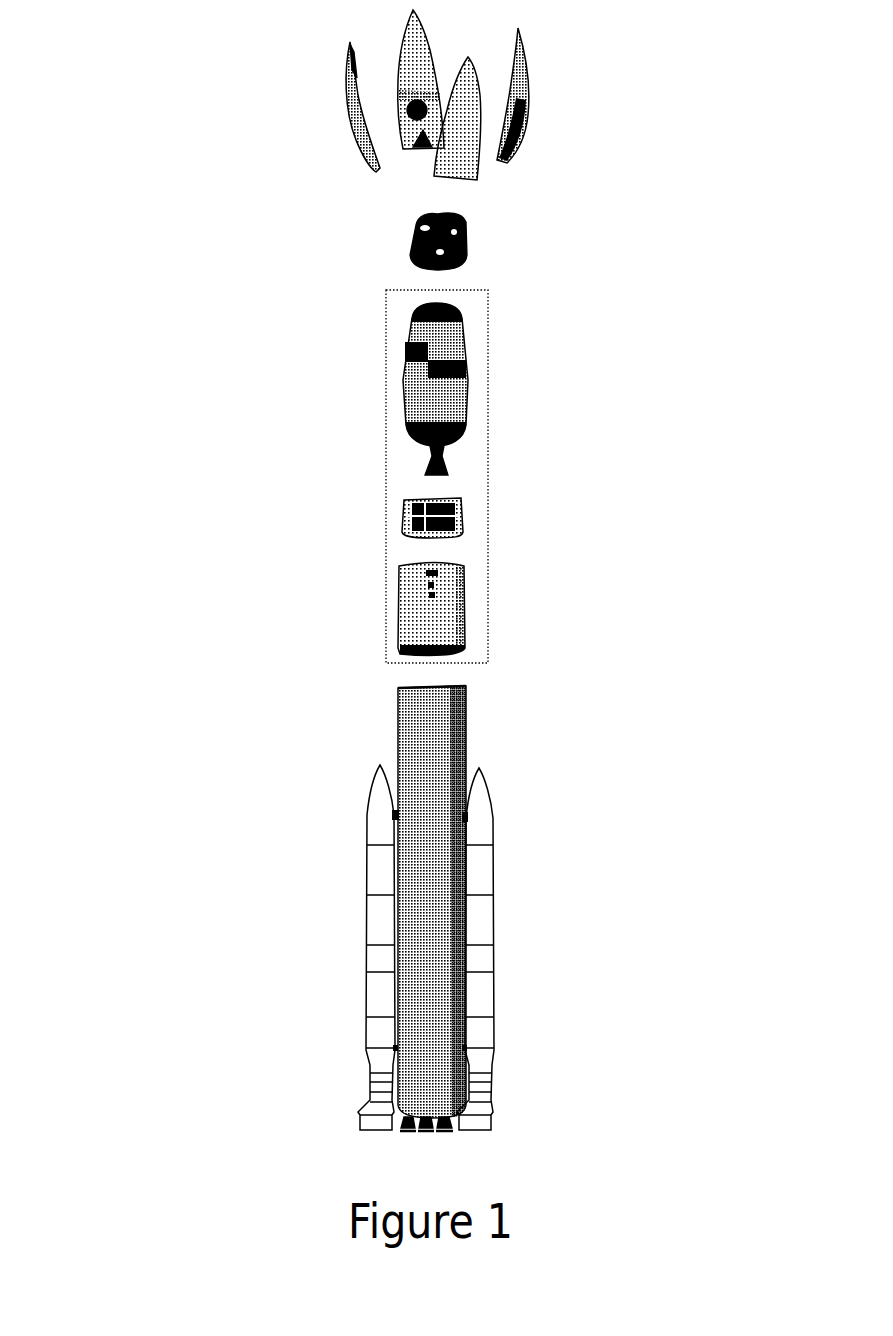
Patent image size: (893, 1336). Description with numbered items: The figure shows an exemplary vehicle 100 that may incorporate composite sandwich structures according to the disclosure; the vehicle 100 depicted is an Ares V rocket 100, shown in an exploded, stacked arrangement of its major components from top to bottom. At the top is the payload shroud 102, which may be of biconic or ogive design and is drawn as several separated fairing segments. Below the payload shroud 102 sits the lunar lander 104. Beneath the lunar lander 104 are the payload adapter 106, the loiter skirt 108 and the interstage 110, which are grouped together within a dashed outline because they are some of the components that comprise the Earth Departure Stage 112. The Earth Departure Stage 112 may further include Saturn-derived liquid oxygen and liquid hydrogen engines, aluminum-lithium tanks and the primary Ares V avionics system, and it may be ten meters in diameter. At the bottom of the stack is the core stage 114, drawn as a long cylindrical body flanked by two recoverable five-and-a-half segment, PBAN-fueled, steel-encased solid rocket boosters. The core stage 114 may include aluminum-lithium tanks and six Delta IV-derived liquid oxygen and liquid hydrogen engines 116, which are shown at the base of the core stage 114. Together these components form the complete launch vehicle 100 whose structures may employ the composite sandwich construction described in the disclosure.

The vehicle 100 is at (359, 592).
The payload shroud 102 is at (343, 97).
The lunar lander 104 is at (467, 237).
The payload adapter 106 is at (410, 318).
The loiter skirt 108 is at (463, 518).
The interstage 110 is at (465, 605).
The Earth Departure Stage (EDS) 112 is at (380, 585).
The core stage 114 is at (466, 725).
The engines 116 is at (436, 1115).